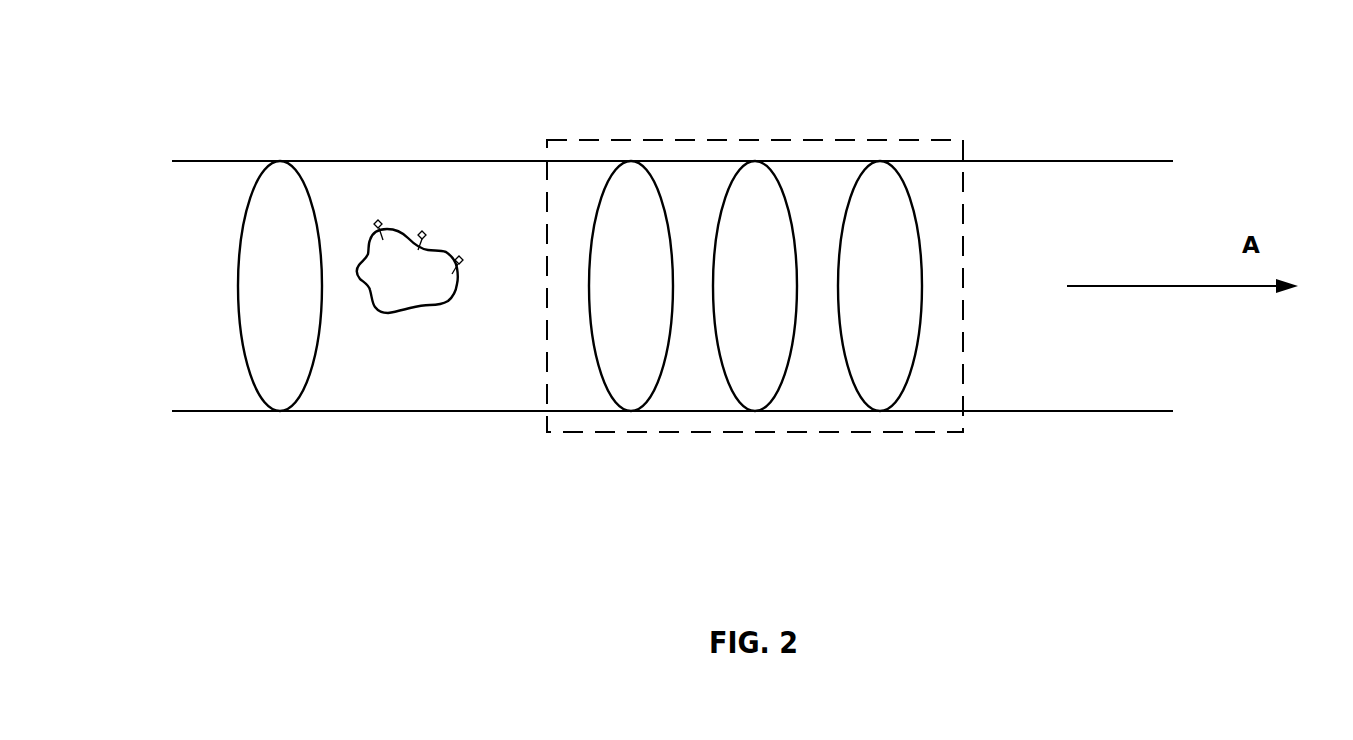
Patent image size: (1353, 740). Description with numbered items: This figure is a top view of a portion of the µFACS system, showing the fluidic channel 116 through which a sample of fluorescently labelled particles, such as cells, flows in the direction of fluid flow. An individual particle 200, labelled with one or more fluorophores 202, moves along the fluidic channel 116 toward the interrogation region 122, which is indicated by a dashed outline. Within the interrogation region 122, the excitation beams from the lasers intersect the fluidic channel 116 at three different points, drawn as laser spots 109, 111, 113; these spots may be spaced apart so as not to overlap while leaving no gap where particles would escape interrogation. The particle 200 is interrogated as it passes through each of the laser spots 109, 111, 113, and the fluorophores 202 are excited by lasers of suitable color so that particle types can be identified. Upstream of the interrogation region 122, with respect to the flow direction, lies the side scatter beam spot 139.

The laser spot 109 is at (622, 412).
The laser spot 111 is at (743, 412).
The laser spot 113 is at (875, 412).
The fluidic channel 116 is at (1053, 160).
The interrogation region 122 is at (900, 139).
The side scatter beam spot 139 is at (278, 160).
The particle 200 is at (411, 195).
The fluorophore 202 is at (461, 254).